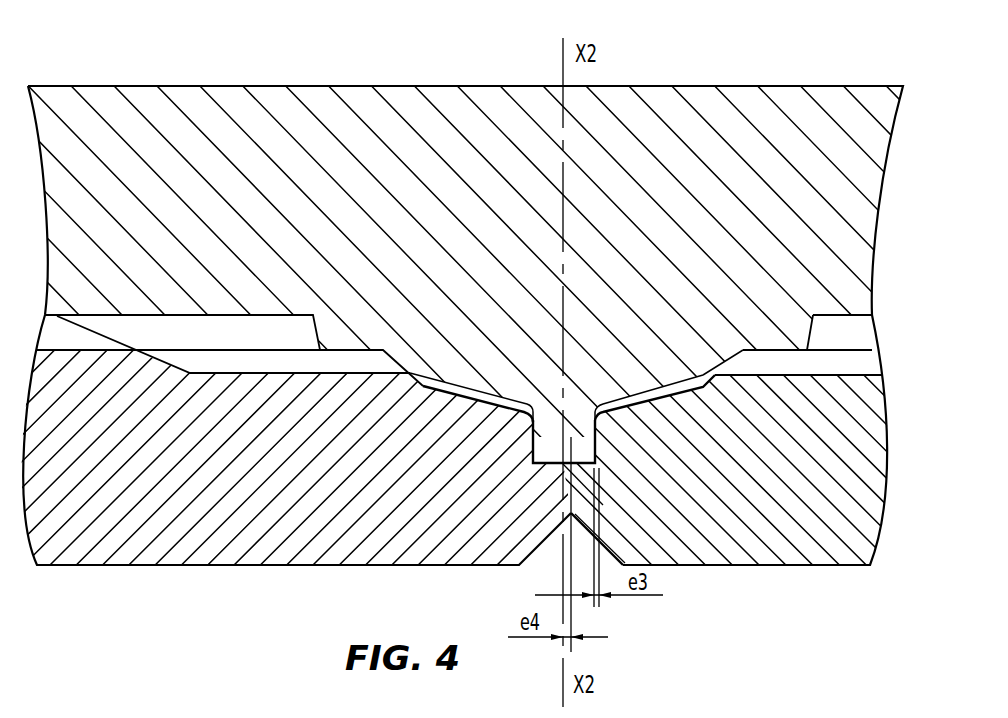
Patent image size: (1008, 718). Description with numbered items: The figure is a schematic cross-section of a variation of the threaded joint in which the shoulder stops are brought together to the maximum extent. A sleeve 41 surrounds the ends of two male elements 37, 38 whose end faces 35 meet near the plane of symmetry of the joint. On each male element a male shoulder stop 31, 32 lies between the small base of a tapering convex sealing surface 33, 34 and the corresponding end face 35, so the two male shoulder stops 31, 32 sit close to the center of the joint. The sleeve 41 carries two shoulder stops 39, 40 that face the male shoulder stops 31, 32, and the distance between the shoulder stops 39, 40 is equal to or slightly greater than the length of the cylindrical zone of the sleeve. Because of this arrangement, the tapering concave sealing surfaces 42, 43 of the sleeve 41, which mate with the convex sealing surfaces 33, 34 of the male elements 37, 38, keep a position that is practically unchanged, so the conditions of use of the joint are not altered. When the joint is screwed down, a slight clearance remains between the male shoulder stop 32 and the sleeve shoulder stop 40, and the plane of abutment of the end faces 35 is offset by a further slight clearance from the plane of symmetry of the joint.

The male shoulder stop 31 is at (532, 441).
The male shoulder stop 32 is at (598, 448).
The tapering convex sealing surface 33 is at (453, 386).
The tapering convex sealing surface 34 is at (663, 425).
The end face 35 is at (578, 487).
The male element 37 is at (267, 568).
The male element 38 is at (820, 568).
The shoulder stop of the sleeve 39 is at (536, 428).
The shoulder stop of the sleeve 40 is at (593, 425).
The sleeve 41 is at (272, 125).
The tapering concave sealing surface 42 is at (470, 402).
The tapering concave sealing surface 43 is at (692, 388).